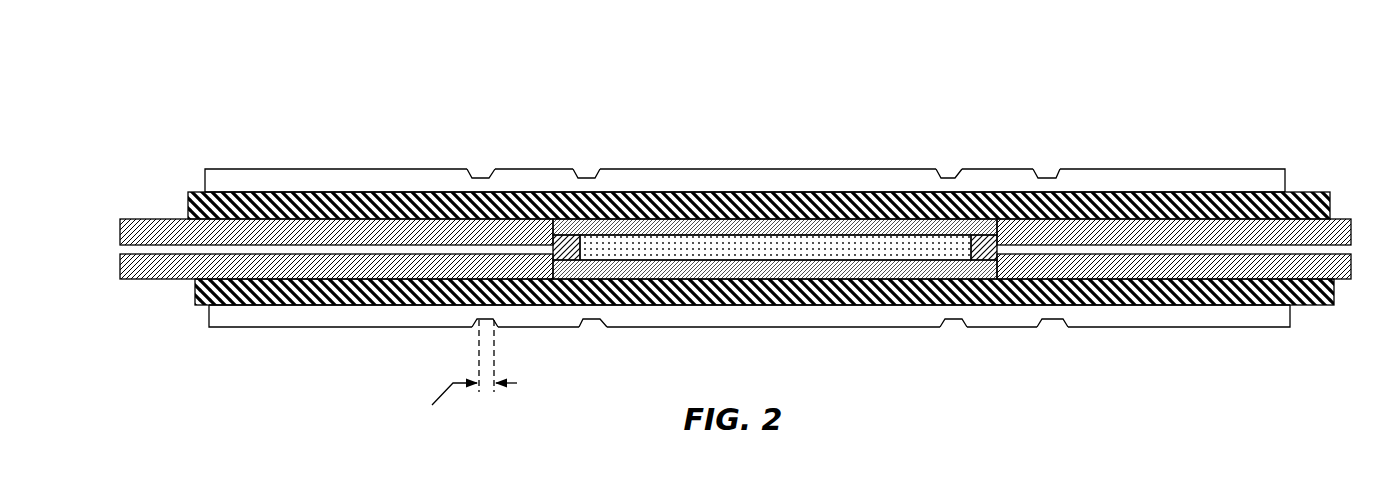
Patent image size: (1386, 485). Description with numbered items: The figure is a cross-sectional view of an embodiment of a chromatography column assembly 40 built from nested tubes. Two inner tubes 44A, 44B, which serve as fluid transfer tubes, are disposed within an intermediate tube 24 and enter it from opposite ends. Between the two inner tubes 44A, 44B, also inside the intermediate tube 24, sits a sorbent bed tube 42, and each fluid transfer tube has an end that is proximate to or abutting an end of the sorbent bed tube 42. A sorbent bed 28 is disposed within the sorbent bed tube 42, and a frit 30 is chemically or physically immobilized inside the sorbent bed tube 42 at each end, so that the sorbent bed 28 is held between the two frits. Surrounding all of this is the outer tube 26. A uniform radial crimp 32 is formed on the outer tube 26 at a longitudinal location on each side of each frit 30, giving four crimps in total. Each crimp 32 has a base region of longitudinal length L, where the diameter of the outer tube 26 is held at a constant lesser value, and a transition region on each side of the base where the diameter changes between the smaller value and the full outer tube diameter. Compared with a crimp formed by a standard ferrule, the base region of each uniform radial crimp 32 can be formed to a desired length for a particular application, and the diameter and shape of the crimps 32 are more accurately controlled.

The chromatography column assembly 40 is at (1100, 114).
The outer tube 26 is at (712, 168).
The uniform radial crimp 32 is at (481, 166).
The intermediate tube 24 is at (1316, 191).
The inner tube 44A is at (123, 218).
The inner tube 44B is at (1349, 280).
The sorbent bed 28 is at (697, 243).
The sorbent bed tube 42 is at (847, 272).
The frit 30 is at (565, 248).